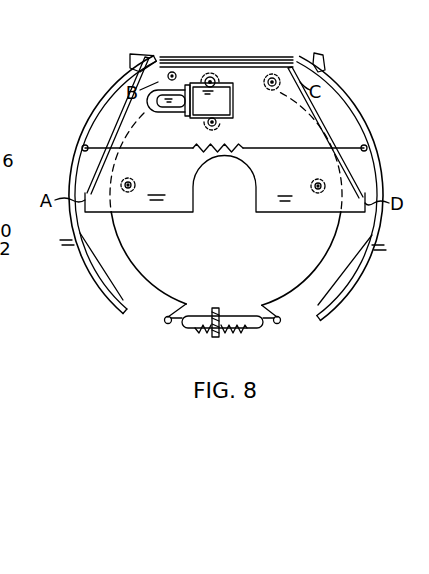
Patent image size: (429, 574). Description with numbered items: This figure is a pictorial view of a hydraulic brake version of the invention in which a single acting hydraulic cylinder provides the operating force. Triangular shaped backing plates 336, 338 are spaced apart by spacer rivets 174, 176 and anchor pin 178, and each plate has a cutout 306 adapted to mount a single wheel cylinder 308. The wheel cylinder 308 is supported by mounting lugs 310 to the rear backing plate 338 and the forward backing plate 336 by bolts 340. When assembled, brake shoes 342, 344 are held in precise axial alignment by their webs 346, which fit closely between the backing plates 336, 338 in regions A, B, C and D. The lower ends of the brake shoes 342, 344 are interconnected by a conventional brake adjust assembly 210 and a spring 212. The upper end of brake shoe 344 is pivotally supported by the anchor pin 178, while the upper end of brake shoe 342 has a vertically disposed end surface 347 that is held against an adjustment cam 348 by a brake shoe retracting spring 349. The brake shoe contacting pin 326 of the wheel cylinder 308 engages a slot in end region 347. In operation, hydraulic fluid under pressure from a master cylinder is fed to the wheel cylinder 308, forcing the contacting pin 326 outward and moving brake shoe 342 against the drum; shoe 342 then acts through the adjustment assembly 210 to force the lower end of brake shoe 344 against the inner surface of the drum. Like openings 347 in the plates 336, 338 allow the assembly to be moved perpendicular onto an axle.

The spacer rivet 174 is at (129, 181).
The spacer rivet 176 is at (319, 182).
The anchor pin 178 is at (270, 88).
The brake adjust assembly 210 is at (233, 318).
The spring 212 is at (229, 330).
The cutout 306 is at (160, 100).
The wheel cylinder 308 is at (224, 108).
The mounting lugs 310 is at (220, 83).
The brake shoe contacting pin 326 is at (168, 77).
The forward backing plate 336 is at (177, 62).
The rear backing plate 338 is at (275, 62).
The bolts 340 is at (214, 126).
The brake shoe 342 is at (92, 116).
The brake shoe 344 is at (340, 92).
The webs 346 is at (135, 278).
The end surface 347 is at (171, 108).
The adjustment cam 348 is at (150, 57).
The brake shoe retracting spring 349 is at (366, 147).